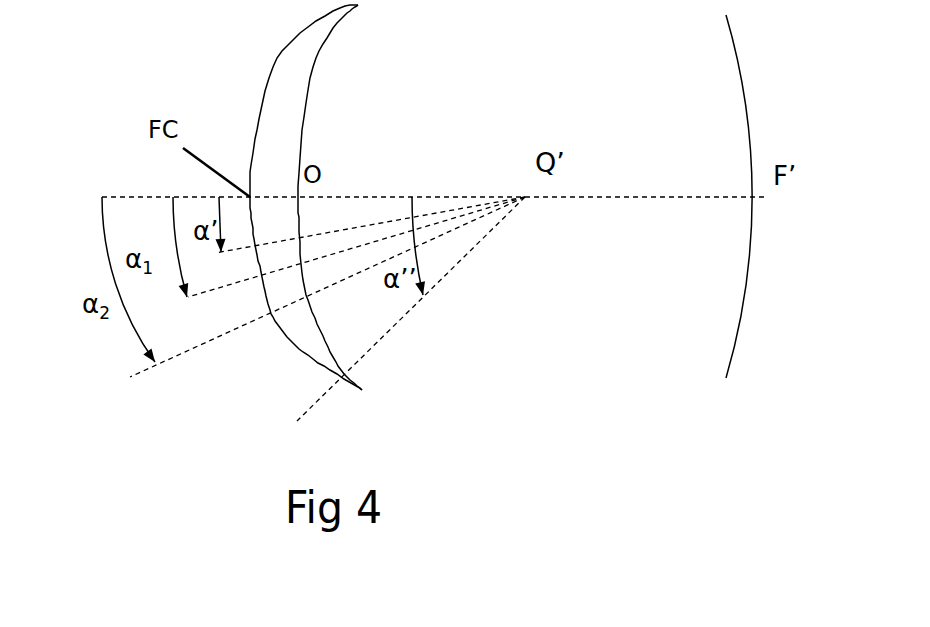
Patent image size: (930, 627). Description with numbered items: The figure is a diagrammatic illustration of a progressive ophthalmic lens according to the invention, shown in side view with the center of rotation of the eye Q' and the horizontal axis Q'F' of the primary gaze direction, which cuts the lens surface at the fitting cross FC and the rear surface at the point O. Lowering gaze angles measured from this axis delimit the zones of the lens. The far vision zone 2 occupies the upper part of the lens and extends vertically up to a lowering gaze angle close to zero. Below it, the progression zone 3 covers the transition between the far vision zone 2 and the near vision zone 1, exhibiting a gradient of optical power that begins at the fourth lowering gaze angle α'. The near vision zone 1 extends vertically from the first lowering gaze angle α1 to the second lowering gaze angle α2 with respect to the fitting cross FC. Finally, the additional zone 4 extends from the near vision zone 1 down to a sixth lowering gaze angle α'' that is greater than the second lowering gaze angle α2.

The near vision zone 1 is at (317, 205).
The far vision zone 2 is at (250, 180).
The progression zone 3 is at (259, 264).
The additional zone 4 is at (303, 352).